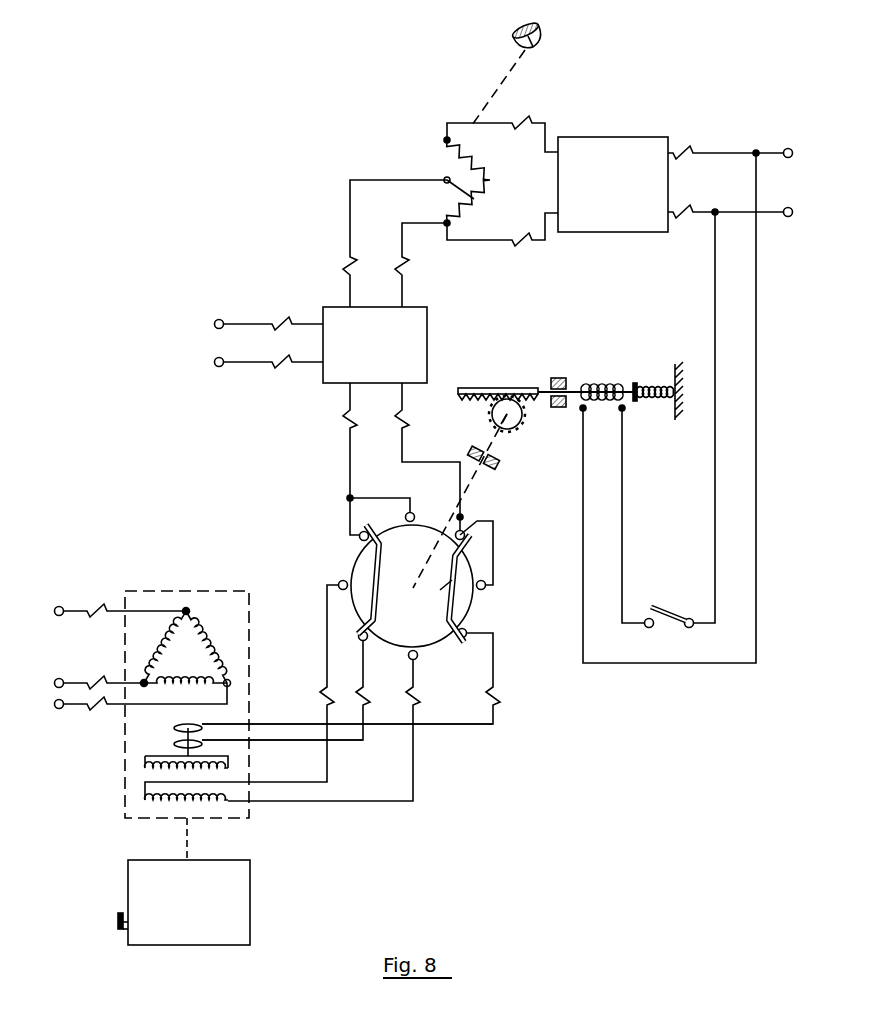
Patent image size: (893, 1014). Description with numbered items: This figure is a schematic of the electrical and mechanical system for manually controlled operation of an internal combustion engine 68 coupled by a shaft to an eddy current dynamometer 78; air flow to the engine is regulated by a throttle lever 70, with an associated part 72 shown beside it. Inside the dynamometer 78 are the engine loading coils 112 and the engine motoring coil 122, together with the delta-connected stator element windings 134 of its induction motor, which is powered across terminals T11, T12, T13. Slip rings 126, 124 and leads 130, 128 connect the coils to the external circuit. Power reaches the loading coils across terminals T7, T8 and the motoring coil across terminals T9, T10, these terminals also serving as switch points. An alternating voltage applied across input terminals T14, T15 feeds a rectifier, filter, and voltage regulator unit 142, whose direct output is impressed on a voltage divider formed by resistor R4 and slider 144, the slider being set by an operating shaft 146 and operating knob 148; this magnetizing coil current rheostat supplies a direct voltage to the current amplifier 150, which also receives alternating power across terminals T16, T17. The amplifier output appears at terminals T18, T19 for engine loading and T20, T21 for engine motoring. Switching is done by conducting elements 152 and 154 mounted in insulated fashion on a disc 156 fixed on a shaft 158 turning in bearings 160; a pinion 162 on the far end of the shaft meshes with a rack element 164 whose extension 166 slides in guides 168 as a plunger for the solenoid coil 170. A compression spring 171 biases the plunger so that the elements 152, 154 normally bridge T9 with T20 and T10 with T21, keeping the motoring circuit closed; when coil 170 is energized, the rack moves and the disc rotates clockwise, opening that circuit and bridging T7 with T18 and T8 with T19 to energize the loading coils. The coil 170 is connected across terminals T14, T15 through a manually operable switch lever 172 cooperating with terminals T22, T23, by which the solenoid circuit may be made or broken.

The operating knob 148 is at (542, 30).
The operating shaft 146 is at (511, 87).
The rectifier, filter, and voltage regulator unit 142 is at (620, 137).
The resistor R4 is at (488, 184).
The slider 144 is at (446, 187).
The current amplifier 150 is at (428, 318).
The rack element 164 is at (480, 401).
The extension of the rack element 166 is at (536, 390).
The guides 168 is at (556, 378).
The solenoid coil 170 is at (605, 385).
The compression spring 171 is at (648, 402).
The pinion 162 is at (524, 417).
The shaft 158 is at (497, 443).
The bearings 160 is at (498, 470).
The conducting element 152 is at (378, 585).
The conducting element 154 is at (448, 582).
The disc 156 is at (444, 640).
The solenoid circuit switch lever 172 is at (666, 612).
The eddy current dynamometer 78 is at (204, 588).
The stator element windings 134 is at (200, 631).
The slip ring 126 is at (176, 728).
The slip ring 124 is at (174, 745).
The lead 130 is at (298, 723).
The lead 128 is at (306, 740).
The engine motoring coil 122 is at (230, 772).
The engine loading coils 112 is at (199, 805).
The internal combustion engine 68 is at (256, 897).
The throttle lever 70 is at (115, 919).
The throttle linkage 72 is at (121, 935).
The terminal T7 is at (416, 659).
The terminal T8 is at (338, 585).
The terminal T9 is at (466, 634).
The terminal T10 is at (365, 641).
The terminal T11 is at (54, 611).
The terminal T12 is at (55, 683).
The terminal T13 is at (55, 704).
The input terminal T14 is at (786, 148).
The input terminal T15 is at (787, 218).
The terminal T16 is at (214, 324).
The terminal T17 is at (214, 362).
The amplifier output terminal T18 is at (485, 590).
The amplifier output terminal T19 is at (422, 511).
The amplifier output terminal T20 is at (464, 531).
The amplifier output terminal T21 is at (359, 539).
The terminal T22 is at (688, 628).
The terminal T23 is at (651, 628).